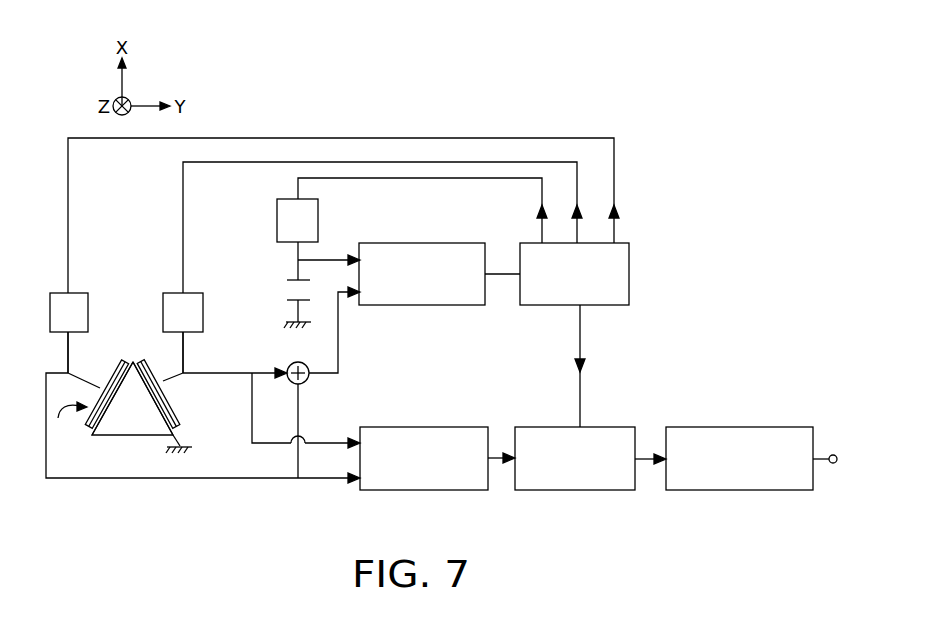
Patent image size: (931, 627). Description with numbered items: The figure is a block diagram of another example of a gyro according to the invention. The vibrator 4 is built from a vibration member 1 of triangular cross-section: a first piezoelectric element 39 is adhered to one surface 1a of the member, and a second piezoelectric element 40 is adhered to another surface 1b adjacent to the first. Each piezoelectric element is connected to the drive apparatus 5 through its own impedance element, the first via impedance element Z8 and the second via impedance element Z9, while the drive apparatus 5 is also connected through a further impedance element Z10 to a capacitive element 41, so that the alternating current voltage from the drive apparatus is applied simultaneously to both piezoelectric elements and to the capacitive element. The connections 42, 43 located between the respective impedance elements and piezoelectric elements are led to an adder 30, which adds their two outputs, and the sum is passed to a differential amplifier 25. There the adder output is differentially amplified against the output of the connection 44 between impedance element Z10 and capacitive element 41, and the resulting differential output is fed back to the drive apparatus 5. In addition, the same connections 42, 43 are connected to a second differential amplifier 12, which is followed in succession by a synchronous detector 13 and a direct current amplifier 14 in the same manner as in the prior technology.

The vibration member 1 is at (137, 425).
The one surface 1a is at (107, 410).
The another surface 1b is at (167, 400).
The vibrator 4 is at (69, 424).
The drive apparatus 5 is at (629, 272).
The differential amplifier 12 is at (440, 491).
The synchronous detector 13 is at (612, 491).
The direct current amplifier 14 is at (768, 491).
The differential amplifier 25 is at (418, 243).
The adder 30 is at (296, 362).
The first piezoelectric element 39 is at (127, 364).
The second piezoelectric element 40 is at (140, 362).
The capacitive element 41 is at (287, 291).
The connection 42 is at (68, 371).
The connection 43 is at (184, 372).
The connection 44 is at (300, 260).
The impedance element Z8 is at (54, 311).
The impedance element Z9 is at (200, 312).
The impedance element Z10 is at (277, 216).